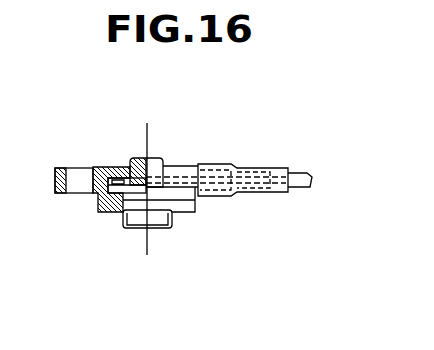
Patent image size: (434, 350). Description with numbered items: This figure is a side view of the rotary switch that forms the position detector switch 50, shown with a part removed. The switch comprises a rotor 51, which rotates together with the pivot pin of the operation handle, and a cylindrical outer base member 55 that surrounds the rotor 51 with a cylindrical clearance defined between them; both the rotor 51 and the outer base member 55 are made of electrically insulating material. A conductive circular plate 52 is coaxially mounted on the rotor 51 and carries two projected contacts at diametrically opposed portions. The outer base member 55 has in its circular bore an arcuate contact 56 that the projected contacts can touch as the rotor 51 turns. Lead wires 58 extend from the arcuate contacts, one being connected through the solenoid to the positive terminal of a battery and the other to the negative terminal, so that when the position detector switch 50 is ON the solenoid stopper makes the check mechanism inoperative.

The position detector switch 50 is at (229, 162).
The rotor 51 is at (135, 228).
The conductive circular plate 52 is at (130, 158).
The cylindrical outer base member 55 is at (118, 167).
The arcuate contact 56 is at (83, 168).
The lead wire 58 is at (300, 173).